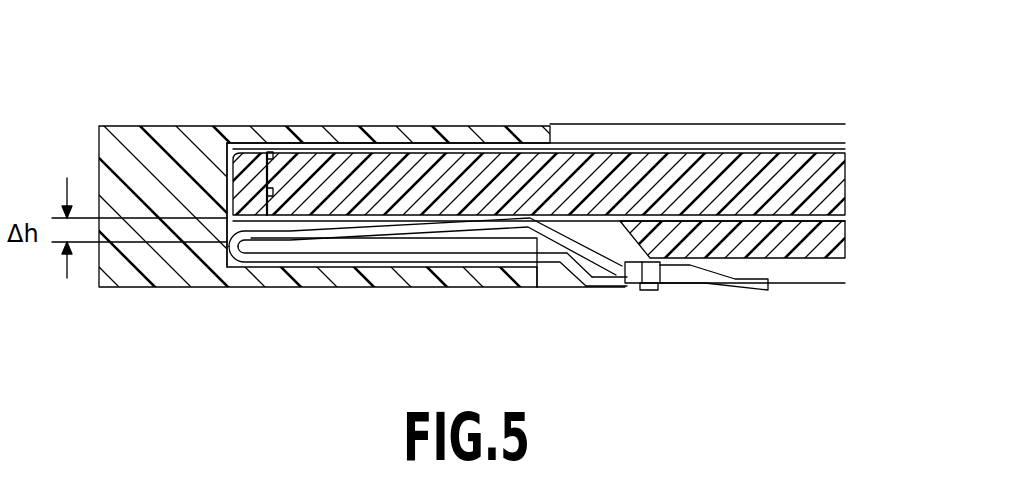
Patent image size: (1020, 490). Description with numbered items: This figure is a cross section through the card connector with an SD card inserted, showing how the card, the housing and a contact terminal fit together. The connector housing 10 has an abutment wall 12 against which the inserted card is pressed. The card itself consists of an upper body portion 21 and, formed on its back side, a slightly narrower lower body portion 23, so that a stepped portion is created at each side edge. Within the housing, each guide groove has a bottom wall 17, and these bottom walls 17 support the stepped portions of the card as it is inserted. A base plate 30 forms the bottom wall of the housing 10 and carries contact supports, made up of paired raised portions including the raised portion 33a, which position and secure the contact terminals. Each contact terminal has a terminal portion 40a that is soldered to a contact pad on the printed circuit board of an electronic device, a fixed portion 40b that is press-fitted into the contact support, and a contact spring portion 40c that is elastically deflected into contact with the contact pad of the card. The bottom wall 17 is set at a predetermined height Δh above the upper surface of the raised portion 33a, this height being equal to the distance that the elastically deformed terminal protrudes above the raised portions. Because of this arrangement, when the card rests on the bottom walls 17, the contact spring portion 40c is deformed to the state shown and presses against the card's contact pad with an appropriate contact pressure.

The connector housing 10 is at (307, 105).
The abutment wall 12 is at (227, 176).
The bottom wall 17 is at (815, 207).
The upper body portion 21 is at (712, 160).
The lower body portion 23 is at (808, 250).
The base plate 30 is at (472, 287).
The raised portion 33a is at (401, 250).
The terminal portion 40a is at (617, 283).
The fixed portion 40b is at (318, 262).
The contact spring portion 40c is at (445, 225).